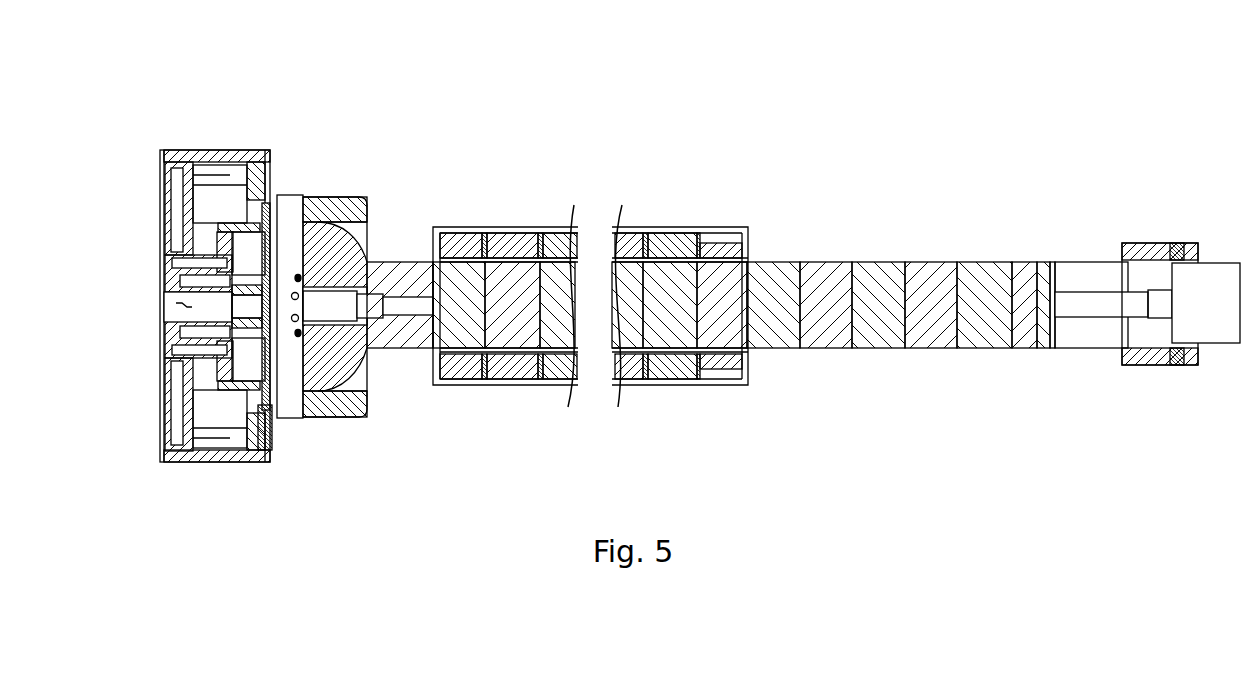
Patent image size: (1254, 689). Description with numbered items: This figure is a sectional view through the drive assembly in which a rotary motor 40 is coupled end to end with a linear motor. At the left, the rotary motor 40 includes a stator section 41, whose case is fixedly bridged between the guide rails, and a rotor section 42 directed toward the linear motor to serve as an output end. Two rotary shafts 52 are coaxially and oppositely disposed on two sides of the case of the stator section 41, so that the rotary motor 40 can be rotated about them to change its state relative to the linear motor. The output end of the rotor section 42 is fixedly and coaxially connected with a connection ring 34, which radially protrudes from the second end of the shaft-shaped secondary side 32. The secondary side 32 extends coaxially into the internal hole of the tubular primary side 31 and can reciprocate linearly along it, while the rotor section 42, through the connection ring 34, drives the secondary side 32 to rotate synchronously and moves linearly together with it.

The rotary motor 40 is at (229, 271).
The stator section 41 is at (177, 353).
The rotor section 42 is at (270, 428).
The rotary shafts 52 is at (168, 305).
The connection ring 34 is at (337, 200).
The tubular primary side 31 is at (679, 226).
The shaft-shaped secondary side 32 is at (868, 258).